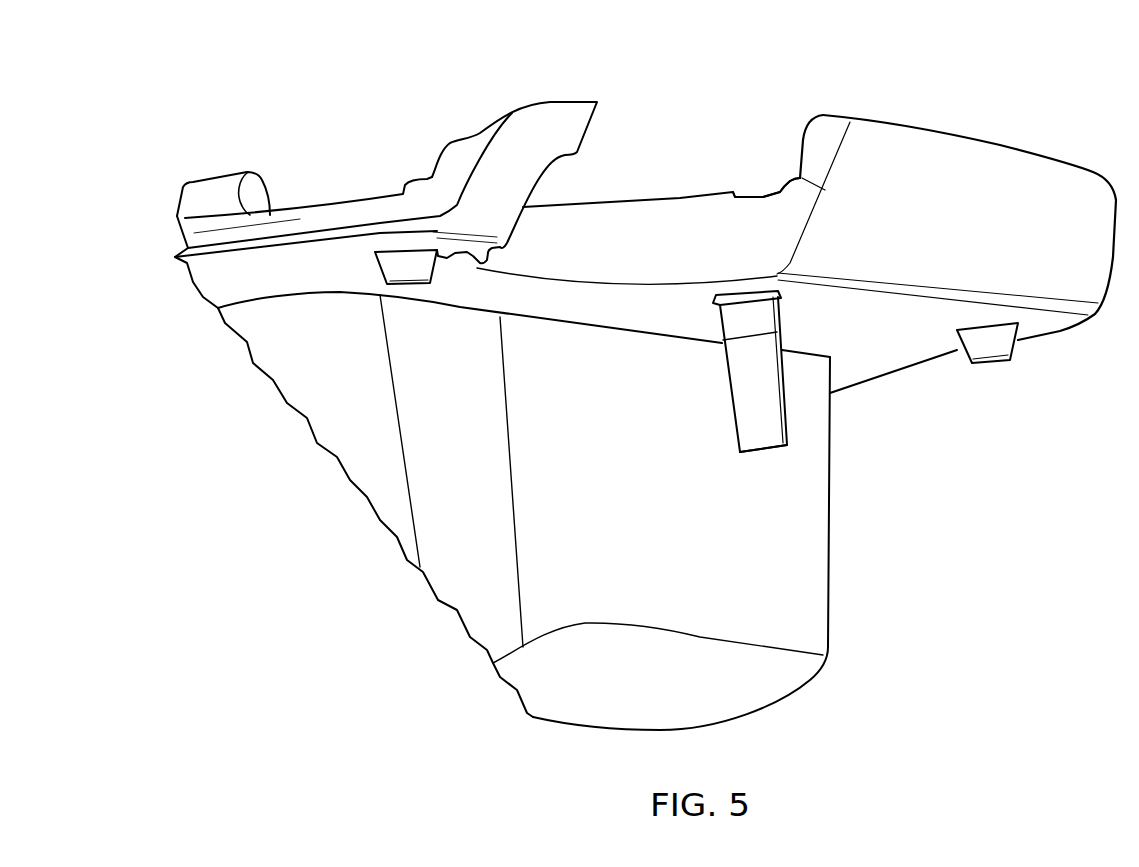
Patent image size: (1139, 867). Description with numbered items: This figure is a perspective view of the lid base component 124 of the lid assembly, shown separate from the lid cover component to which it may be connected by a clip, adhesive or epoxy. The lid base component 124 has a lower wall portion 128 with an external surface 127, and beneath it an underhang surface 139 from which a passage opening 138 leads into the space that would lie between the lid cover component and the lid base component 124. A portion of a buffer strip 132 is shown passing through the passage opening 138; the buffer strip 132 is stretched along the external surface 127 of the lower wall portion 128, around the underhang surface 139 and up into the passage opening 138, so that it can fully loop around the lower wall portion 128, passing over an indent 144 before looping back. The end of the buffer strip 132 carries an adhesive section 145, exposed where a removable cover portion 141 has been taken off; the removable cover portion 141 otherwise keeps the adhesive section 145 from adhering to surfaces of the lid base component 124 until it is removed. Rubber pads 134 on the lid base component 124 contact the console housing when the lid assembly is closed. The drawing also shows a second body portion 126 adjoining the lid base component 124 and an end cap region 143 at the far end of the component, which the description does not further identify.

The lid base component 124 is at (366, 121).
The second housing portion 126 is at (667, 113).
The external surface 127 is at (673, 273).
The lower wall portion 128 is at (651, 256).
The buffer strip 132 is at (688, 398).
The rubber pad 134 is at (377, 262).
The passage opening 138 is at (797, 310).
The underhang surface 139 is at (908, 354).
The removable cover portion 141 is at (725, 328).
The end cap 143 is at (216, 190).
The indent 144 is at (751, 178).
The adhesive section 145 is at (747, 437).